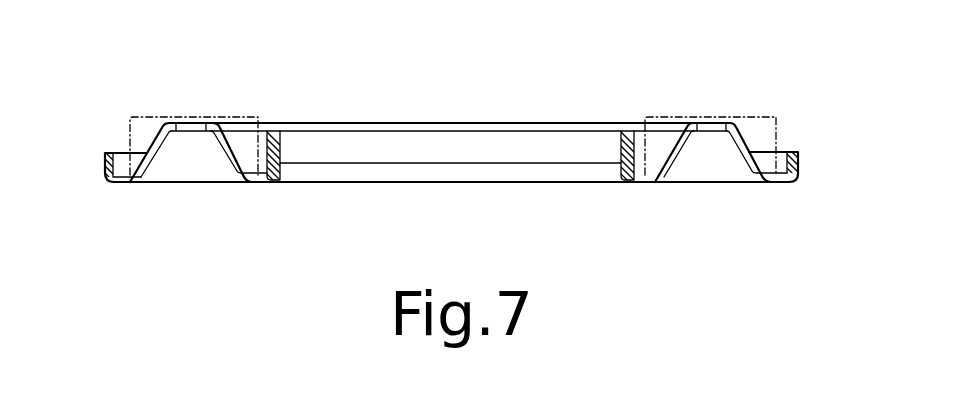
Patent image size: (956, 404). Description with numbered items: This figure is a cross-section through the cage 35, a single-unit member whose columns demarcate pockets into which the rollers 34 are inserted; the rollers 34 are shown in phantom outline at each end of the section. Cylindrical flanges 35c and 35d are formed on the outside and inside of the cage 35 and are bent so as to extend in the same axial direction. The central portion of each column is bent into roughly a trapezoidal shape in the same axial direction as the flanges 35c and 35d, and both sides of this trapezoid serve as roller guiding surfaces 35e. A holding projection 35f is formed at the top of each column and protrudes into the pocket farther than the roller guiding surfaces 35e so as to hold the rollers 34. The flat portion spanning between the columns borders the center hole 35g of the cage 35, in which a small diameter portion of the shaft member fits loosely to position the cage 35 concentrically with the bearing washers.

The roller 34 is at (128, 116).
The cage 35 is at (727, 89).
The outside cylindrical flange 35c is at (107, 160).
The inside cylindrical flange 35d is at (277, 152).
The roller guiding surface 35e is at (149, 153).
The holding projection 35f is at (188, 132).
The center hole 35g is at (297, 123).